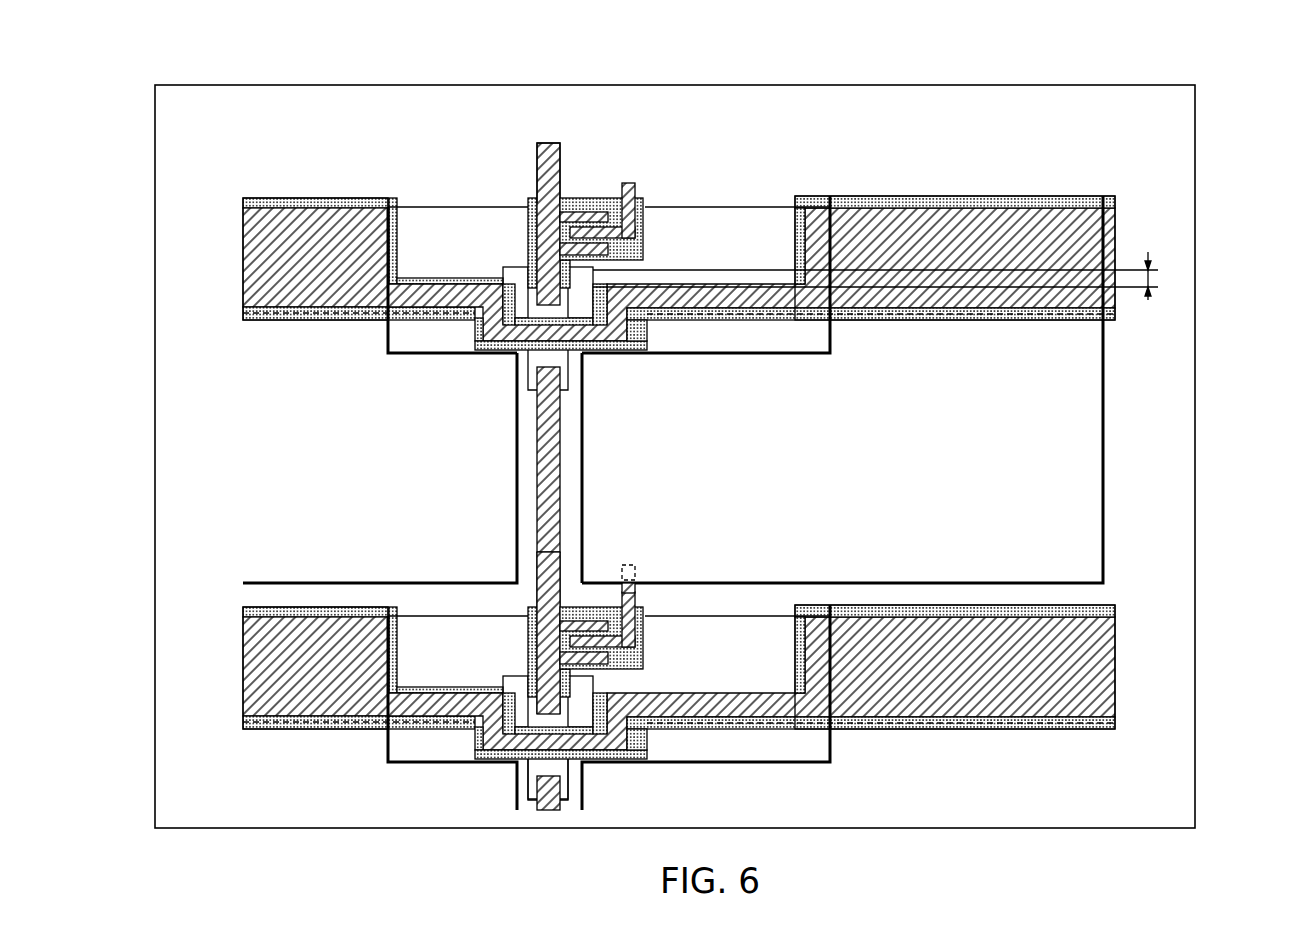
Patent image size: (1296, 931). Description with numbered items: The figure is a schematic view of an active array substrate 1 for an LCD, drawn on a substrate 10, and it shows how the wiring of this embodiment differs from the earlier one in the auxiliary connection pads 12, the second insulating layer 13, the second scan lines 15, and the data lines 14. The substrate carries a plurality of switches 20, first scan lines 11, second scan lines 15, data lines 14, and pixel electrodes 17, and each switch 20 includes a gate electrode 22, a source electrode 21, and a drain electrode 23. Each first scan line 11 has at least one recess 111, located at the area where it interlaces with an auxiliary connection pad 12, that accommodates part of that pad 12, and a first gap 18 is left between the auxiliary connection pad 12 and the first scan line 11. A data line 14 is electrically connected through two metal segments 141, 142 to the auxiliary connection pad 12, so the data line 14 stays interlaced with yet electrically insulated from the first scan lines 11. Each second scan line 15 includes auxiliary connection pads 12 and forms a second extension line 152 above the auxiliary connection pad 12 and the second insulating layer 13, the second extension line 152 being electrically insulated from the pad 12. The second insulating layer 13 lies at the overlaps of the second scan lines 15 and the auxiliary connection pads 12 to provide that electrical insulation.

The active array substrate 1 is at (718, 431).
The substrate 10 is at (1197, 137).
The first scan line 11 is at (752, 228).
The auxiliary connection pad 12 is at (508, 283).
The second insulating layer 13 is at (285, 320).
The data line 14 is at (552, 143).
The metal segment 141 is at (535, 153).
The metal segment 142 is at (537, 452).
The second scan line 15 is at (262, 265).
The second extension line 152 is at (430, 290).
The pixel electrode 17 is at (463, 392).
The first gap 18 is at (890, 276).
The switch 20 is at (607, 173).
The source electrode 21 is at (588, 205).
The gate electrode 22 is at (618, 207).
The drain electrode 23 is at (638, 184).
The recess 111 is at (520, 297).